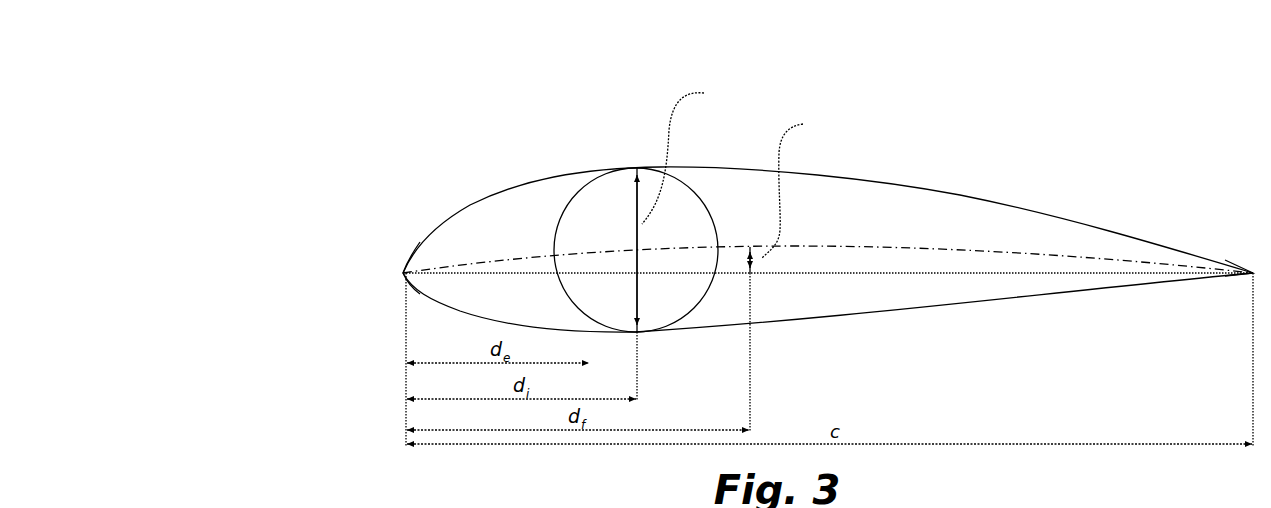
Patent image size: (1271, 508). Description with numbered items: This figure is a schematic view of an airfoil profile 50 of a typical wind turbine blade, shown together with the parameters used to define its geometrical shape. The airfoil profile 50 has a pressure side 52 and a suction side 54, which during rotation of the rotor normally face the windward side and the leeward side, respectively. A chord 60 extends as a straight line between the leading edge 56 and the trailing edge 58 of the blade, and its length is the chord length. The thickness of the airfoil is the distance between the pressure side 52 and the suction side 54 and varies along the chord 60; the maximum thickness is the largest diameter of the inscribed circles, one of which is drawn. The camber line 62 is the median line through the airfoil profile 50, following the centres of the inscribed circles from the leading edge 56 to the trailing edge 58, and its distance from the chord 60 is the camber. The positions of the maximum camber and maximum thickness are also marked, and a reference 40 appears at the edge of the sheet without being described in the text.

The blade 40 is at (262, 507).
The airfoil profile 50 is at (810, 194).
The pressure side surface 52 is at (997, 302).
The suction side surface 54 is at (935, 188).
The leading edge 56 is at (403, 273).
The trailing edge 58 is at (1253, 273).
The chord line 60 is at (1037, 272).
The camber line 62 is at (818, 245).